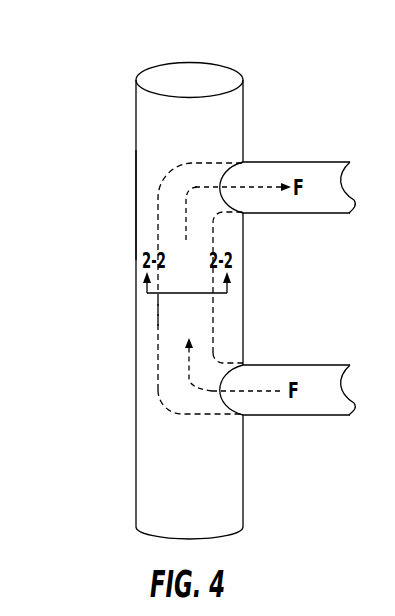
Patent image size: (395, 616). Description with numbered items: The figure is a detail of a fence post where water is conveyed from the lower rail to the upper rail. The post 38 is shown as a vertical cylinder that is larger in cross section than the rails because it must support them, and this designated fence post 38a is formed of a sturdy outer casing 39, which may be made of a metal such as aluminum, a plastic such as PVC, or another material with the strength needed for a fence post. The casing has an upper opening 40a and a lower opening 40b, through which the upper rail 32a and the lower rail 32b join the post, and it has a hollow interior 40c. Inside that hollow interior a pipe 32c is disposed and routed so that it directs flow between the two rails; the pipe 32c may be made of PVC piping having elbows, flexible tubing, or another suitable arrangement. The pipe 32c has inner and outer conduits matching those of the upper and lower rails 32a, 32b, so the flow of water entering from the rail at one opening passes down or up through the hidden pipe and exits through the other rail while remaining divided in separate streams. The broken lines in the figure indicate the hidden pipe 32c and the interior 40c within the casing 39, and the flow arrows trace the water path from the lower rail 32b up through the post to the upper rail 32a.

The post 38 is at (136, 127).
The designated fence post 38a is at (228, 63).
The outer casing 39 is at (136, 203).
The upper opening 40a is at (243, 162).
The lower opening 40b is at (243, 365).
The hollow interior 40c is at (169, 157).
The upper rail 32a is at (297, 162).
The lower rail 32b is at (297, 365).
The pipe 32c is at (158, 313).